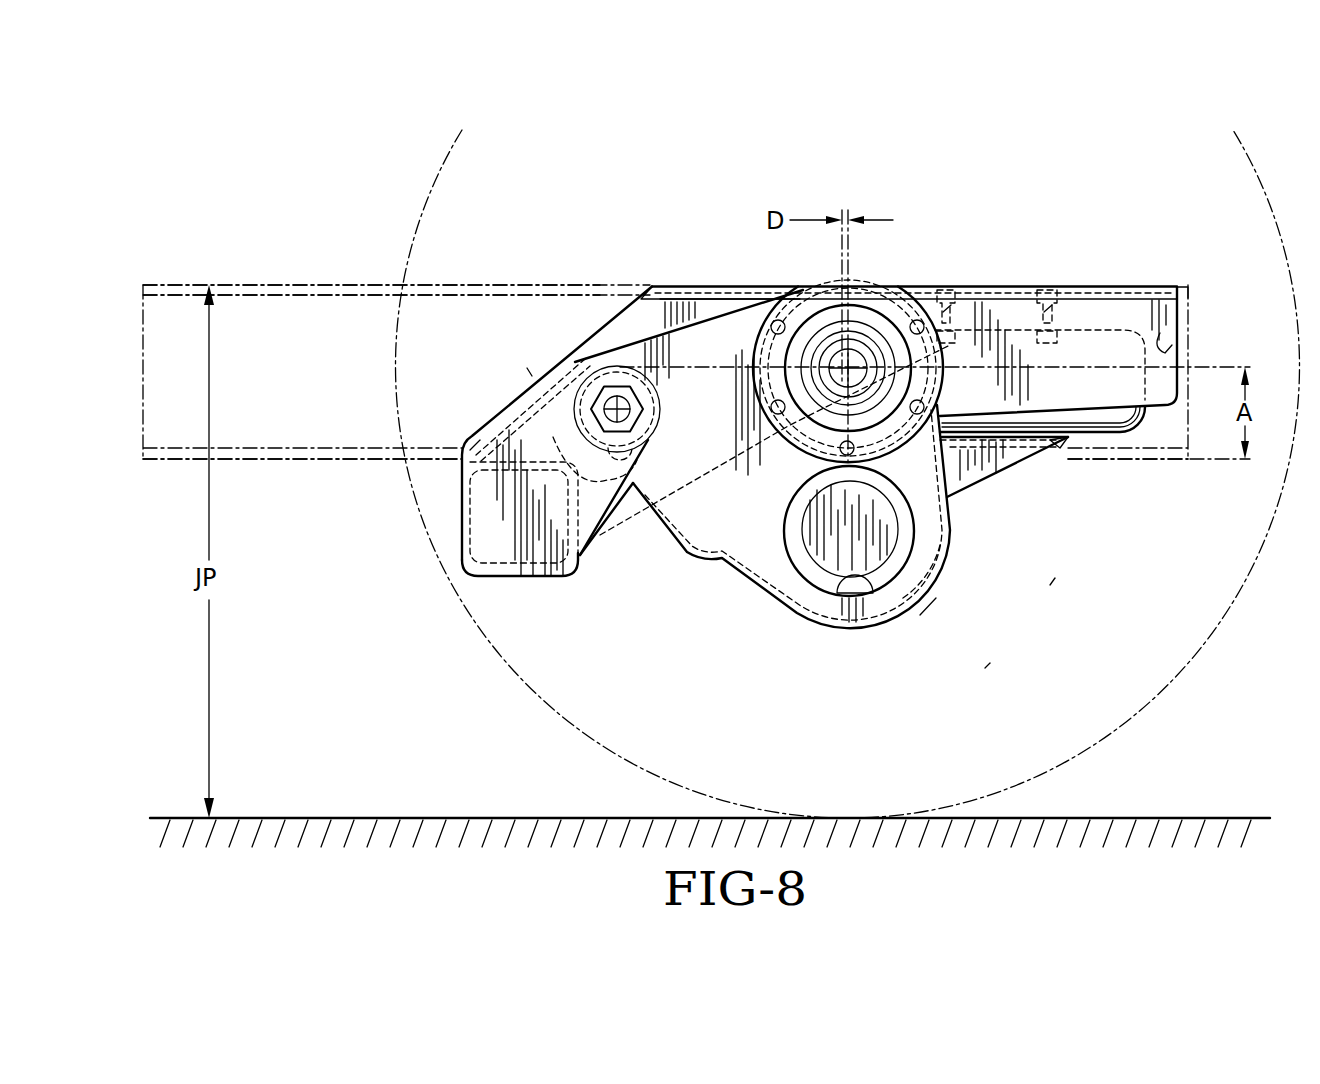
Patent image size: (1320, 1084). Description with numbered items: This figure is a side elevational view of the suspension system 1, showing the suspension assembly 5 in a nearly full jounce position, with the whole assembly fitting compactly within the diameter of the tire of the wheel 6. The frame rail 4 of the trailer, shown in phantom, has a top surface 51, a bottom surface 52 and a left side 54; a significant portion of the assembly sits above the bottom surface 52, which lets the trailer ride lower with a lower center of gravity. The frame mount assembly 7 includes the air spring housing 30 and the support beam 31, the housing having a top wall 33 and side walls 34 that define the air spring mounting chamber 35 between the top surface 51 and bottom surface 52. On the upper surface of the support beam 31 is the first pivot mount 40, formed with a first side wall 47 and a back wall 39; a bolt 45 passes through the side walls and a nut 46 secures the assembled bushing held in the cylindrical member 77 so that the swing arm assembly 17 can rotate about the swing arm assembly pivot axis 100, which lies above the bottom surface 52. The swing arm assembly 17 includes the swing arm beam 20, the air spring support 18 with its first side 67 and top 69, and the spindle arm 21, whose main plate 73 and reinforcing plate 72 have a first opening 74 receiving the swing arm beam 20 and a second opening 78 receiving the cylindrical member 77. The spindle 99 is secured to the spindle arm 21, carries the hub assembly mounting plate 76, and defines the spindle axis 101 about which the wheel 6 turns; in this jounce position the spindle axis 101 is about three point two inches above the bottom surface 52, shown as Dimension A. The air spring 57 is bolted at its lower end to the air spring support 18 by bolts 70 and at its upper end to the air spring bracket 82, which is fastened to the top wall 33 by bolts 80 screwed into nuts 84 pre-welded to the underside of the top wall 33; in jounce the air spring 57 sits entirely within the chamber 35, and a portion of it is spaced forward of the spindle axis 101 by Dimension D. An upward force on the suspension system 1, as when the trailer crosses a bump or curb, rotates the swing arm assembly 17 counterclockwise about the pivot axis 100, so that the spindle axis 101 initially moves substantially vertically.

The suspension system 1 is at (1055, 578).
The frame rail 4 is at (264, 286).
The suspension assembly 5 is at (990, 663).
The wheel 6 is at (522, 685).
The frame mount assembly 7 is at (550, 591).
The swing arm assembly 17 is at (936, 598).
The air spring support 18 is at (960, 495).
The swing arm beam 20 is at (818, 574).
The spindle arm 21 is at (755, 589).
The air spring housing 30 is at (1128, 287).
The support beam 31 is at (461, 511).
The top wall 33 is at (708, 285).
The side wall 34 is at (1160, 322).
The air spring mounting chamber 35 is at (1185, 345).
The back wall 39 is at (525, 390).
The first pivot mount 40 is at (531, 375).
The bolt 45 is at (630, 440).
The nut 46 is at (615, 386).
The first side wall 47 is at (597, 497).
The top surface 51 is at (375, 281).
The bottom surface 52 is at (296, 460).
The left side 54 is at (323, 281).
The air spring 57 is at (1140, 425).
The first side 67 is at (968, 472).
The top 69 is at (1027, 418).
The bolt 70 is at (1053, 452).
The reinforcing plate 72 is at (928, 556).
The main plate 73 is at (920, 585).
The first opening 74 is at (875, 578).
The hub assembly mounting plate 76 is at (765, 338).
The cylindrical member 77 is at (553, 437).
The second opening 78 is at (642, 460).
The bolt 80 is at (950, 320).
The air spring bracket 82 is at (1012, 320).
The nut 84 is at (937, 290).
The spindle 99 is at (826, 350).
The swing arm assembly pivot axis 100 is at (622, 410).
The spindle axis 101 is at (848, 378).